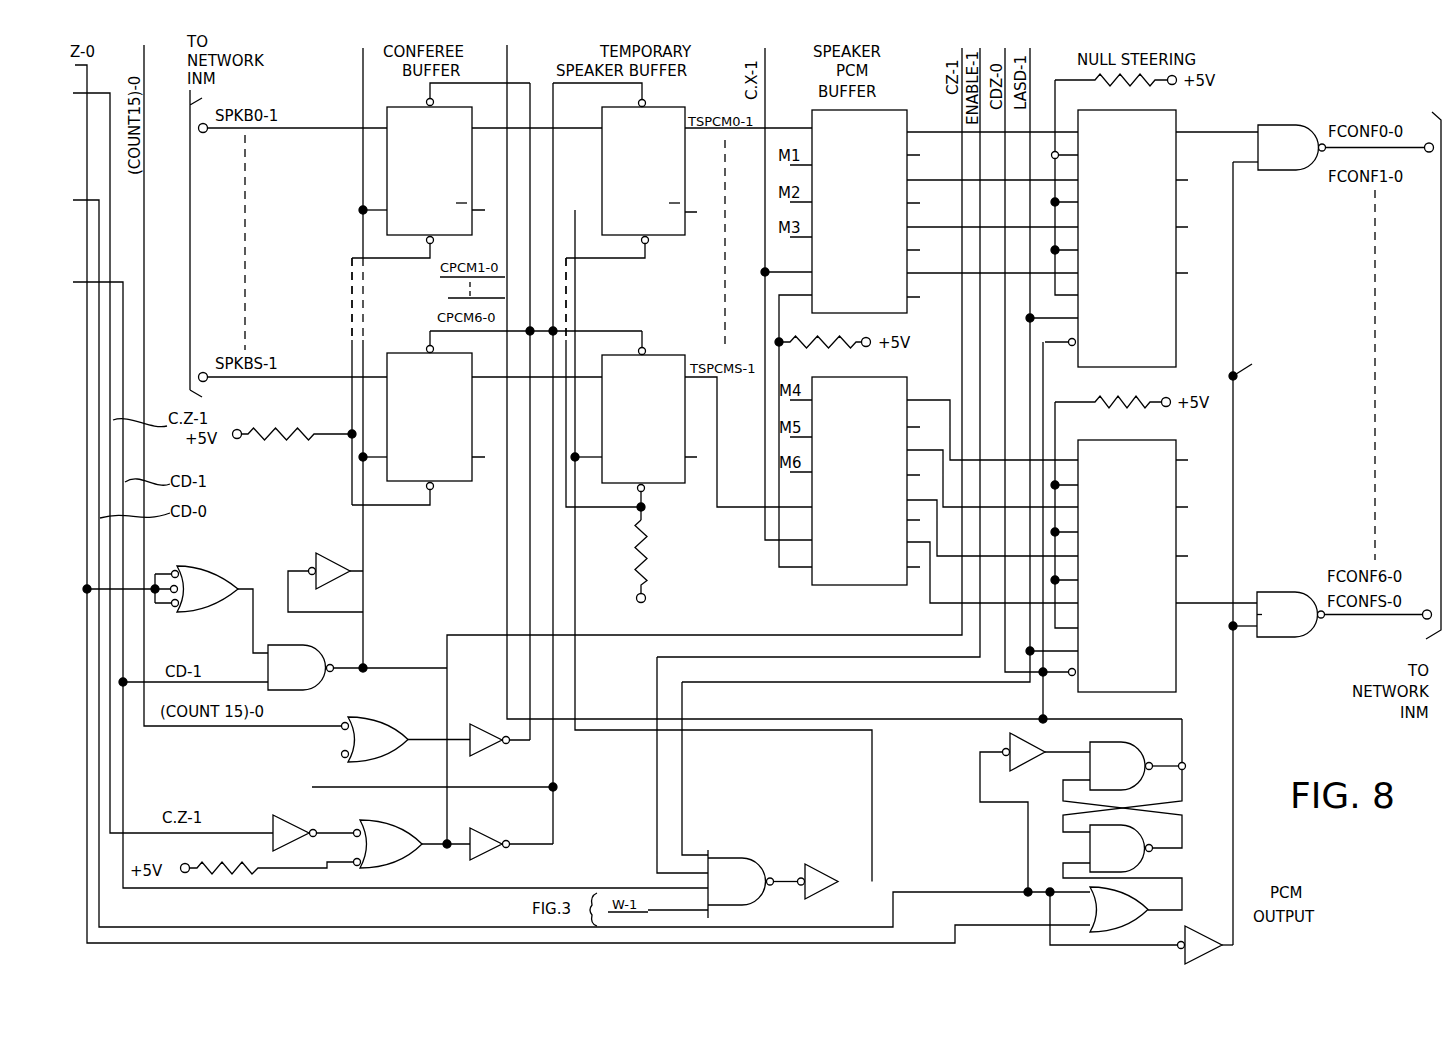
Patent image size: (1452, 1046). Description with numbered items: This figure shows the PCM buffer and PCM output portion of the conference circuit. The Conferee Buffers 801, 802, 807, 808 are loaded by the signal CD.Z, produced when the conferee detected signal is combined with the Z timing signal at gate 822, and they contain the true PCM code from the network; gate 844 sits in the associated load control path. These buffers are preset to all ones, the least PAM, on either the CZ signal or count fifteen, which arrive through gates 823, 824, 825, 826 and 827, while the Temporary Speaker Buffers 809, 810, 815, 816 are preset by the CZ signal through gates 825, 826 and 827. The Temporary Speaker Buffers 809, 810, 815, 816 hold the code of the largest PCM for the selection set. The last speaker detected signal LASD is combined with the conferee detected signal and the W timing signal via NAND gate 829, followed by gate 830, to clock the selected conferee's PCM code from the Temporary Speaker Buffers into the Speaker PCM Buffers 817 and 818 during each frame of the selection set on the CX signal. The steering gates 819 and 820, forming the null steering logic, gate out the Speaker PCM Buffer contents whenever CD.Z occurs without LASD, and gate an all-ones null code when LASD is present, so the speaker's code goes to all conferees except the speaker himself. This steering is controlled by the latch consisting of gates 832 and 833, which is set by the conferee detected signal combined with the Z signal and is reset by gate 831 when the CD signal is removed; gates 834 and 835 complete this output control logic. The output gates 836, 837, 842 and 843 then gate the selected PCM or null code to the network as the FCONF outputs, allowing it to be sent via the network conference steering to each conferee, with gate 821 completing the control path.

The conferee buffer 801 is at (427, 99).
The conferee buffer 802 is at (398, 312).
The conferee buffer 807 is at (426, 404).
The conferee buffer 808 is at (433, 490).
The temporary speaker buffer 809 is at (647, 100).
The temporary speaker buffer 810 is at (642, 310).
The temporary speaker buffer 815 is at (643, 397).
The temporary speaker buffer 816 is at (645, 493).
The speaker PCM buffer 817 is at (898, 109).
The speaker PCM buffer 818 is at (876, 586).
The null steering gate 819 is at (1165, 109).
The null steering gate 820 is at (1168, 692).
The gate 821 is at (316, 554).
The gate 822 is at (290, 646).
The gate 823 is at (386, 760).
The gate 824 is at (497, 756).
The gate 825 is at (296, 826).
The gate 826 is at (397, 824).
The gate 827 is at (493, 834).
The NAND gate 829 is at (737, 858).
The gate 830 is at (817, 869).
The gate 831 is at (1031, 745).
The latch gate 832 is at (1129, 745).
The latch gate 833 is at (1146, 870).
The gate 834 is at (1129, 932).
The gate 835 is at (1199, 966).
The output gate 836 is at (1290, 124).
The output gate 837 is at (1287, 545).
The output gate 842 is at (1344, 599).
The output gate 843 is at (1280, 638).
The gate 844 is at (212, 566).